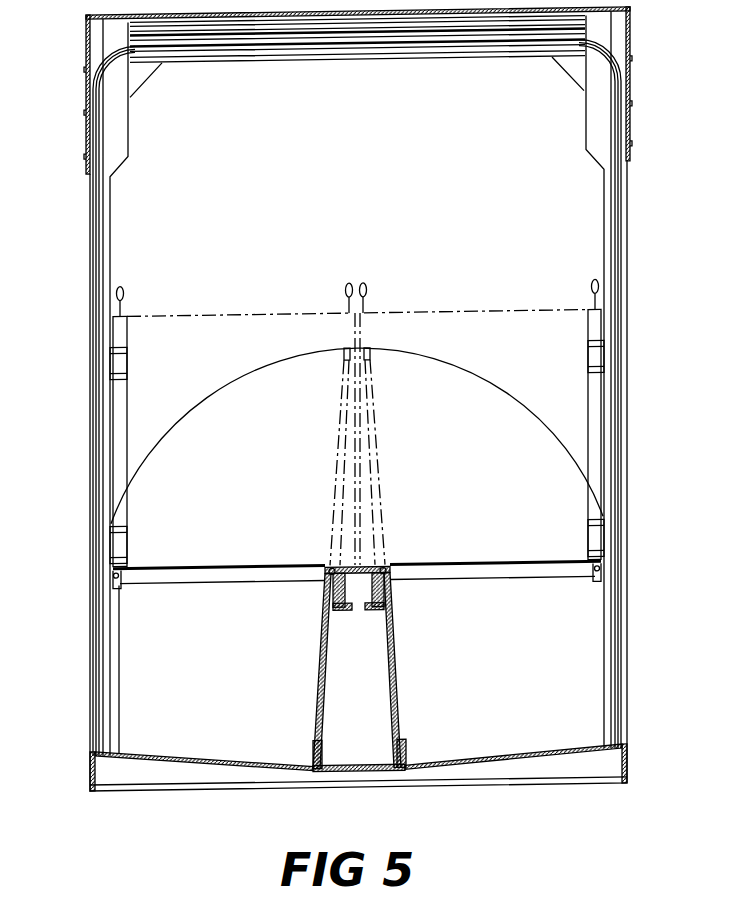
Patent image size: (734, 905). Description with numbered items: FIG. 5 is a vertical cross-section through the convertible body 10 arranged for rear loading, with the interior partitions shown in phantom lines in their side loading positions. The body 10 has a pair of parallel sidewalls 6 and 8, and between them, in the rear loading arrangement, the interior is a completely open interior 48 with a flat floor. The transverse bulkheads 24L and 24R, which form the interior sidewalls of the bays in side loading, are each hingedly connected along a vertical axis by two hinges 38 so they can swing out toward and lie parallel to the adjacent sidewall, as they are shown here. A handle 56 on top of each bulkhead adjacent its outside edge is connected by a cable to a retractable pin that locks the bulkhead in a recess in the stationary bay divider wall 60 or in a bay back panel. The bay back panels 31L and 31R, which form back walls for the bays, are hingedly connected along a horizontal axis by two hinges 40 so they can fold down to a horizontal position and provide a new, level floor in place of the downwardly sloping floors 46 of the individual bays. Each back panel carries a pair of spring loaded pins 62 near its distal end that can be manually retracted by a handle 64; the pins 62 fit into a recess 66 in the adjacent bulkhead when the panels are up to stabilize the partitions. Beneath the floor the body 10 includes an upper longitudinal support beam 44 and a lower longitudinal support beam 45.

The sidewall 6 is at (85, 83).
The sidewall 8 is at (637, 145).
The body 10 is at (637, 75).
The bulkhead 24L is at (118, 420).
The bulkhead 24R is at (598, 412).
The bay back panel 31L is at (220, 581).
The bay back panel 31R is at (478, 581).
The hinge 38 is at (112, 358).
The hinge 40 is at (330, 568).
The upper longitudinal support beam 44 is at (336, 611).
The lower longitudinal support beam 45 is at (378, 765).
The downwardly sloping floor 46 is at (178, 750).
The completely open interior 48 is at (380, 132).
The handle 56 is at (125, 283).
The stationary bay divider wall 60 is at (122, 680).
The spring loaded pin 62 is at (115, 578).
The handle 64 is at (118, 586).
The recess 66 is at (368, 352).